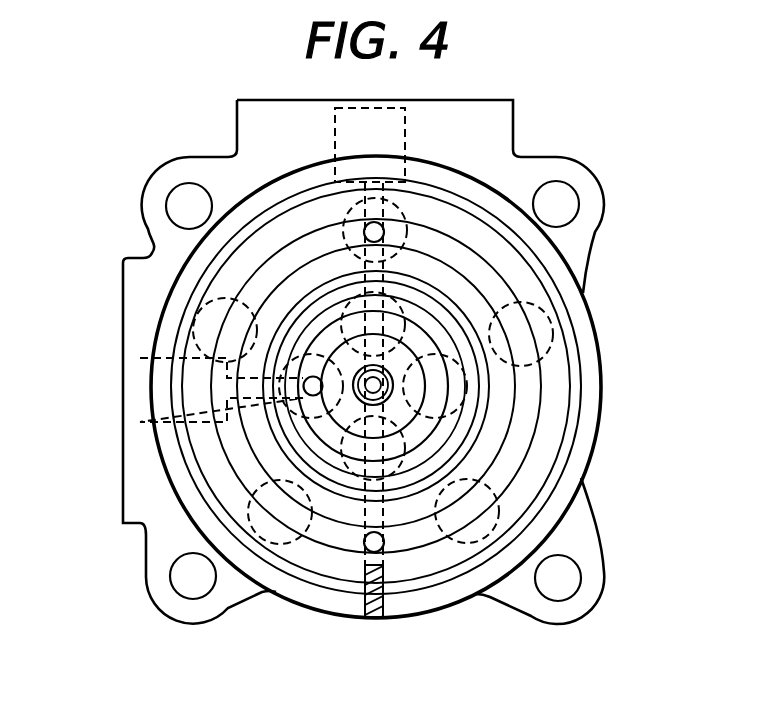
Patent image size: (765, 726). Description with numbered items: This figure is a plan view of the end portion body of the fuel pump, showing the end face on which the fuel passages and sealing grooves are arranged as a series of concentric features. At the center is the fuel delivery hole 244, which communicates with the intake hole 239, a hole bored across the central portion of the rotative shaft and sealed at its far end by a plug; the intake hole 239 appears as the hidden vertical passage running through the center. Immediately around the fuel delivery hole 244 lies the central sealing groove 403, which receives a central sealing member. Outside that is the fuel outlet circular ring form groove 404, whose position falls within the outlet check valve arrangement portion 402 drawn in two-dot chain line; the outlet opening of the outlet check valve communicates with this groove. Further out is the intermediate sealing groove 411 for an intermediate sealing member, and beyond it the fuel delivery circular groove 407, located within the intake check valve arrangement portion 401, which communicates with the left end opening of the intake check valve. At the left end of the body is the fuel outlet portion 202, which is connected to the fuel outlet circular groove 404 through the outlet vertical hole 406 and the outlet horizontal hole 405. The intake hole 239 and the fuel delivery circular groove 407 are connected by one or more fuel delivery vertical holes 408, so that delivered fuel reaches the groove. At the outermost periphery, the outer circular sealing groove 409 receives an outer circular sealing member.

The fuel outlet portion 202 is at (121, 401).
The intake hole 239 is at (382, 262).
The fuel delivery hole 244 is at (376, 388).
The intake check valve arrangement portion 401 is at (548, 345).
The outlet check valve arrangement portion 402 is at (450, 338).
The central sealing groove 403 is at (368, 393).
The fuel outlet circular ring form groove 404 is at (396, 420).
The outlet horizontal hole 405 is at (304, 394).
The outlet vertical hole 406 is at (227, 394).
The fuel delivery circular groove 407 is at (230, 477).
The fuel delivery vertical hole 408 is at (385, 558).
The outer circular sealing groove 409 is at (217, 527).
The intermediate sealing groove 411 is at (540, 552).